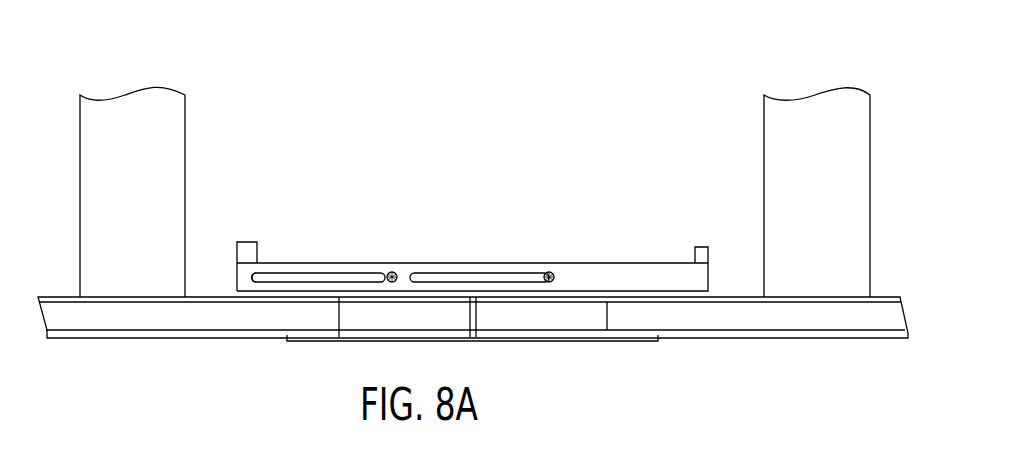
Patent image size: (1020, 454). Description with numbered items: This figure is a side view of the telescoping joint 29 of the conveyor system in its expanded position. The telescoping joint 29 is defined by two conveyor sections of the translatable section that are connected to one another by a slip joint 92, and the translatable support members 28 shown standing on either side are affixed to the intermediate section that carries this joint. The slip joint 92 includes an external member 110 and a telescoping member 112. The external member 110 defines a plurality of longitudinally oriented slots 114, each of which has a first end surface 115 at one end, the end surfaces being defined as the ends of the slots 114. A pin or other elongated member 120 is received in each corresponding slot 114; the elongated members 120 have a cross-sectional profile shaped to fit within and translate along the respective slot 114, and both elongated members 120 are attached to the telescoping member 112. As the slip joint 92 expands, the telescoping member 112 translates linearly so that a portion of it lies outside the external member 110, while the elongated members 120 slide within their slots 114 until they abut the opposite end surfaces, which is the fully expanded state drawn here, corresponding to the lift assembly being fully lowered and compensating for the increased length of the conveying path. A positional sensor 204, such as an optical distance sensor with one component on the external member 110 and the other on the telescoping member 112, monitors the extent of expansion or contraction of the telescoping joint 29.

The translatable support member 28 is at (94, 183).
The telescoping joint 29 is at (475, 82).
The slip joint 92 is at (474, 231).
The external member 110 is at (303, 262).
The telescoping member 112 is at (621, 262).
The slot 114 is at (358, 272).
The first end surface 115 is at (258, 275).
The elongated member 120 is at (393, 271).
The positional sensor 204 is at (244, 252).